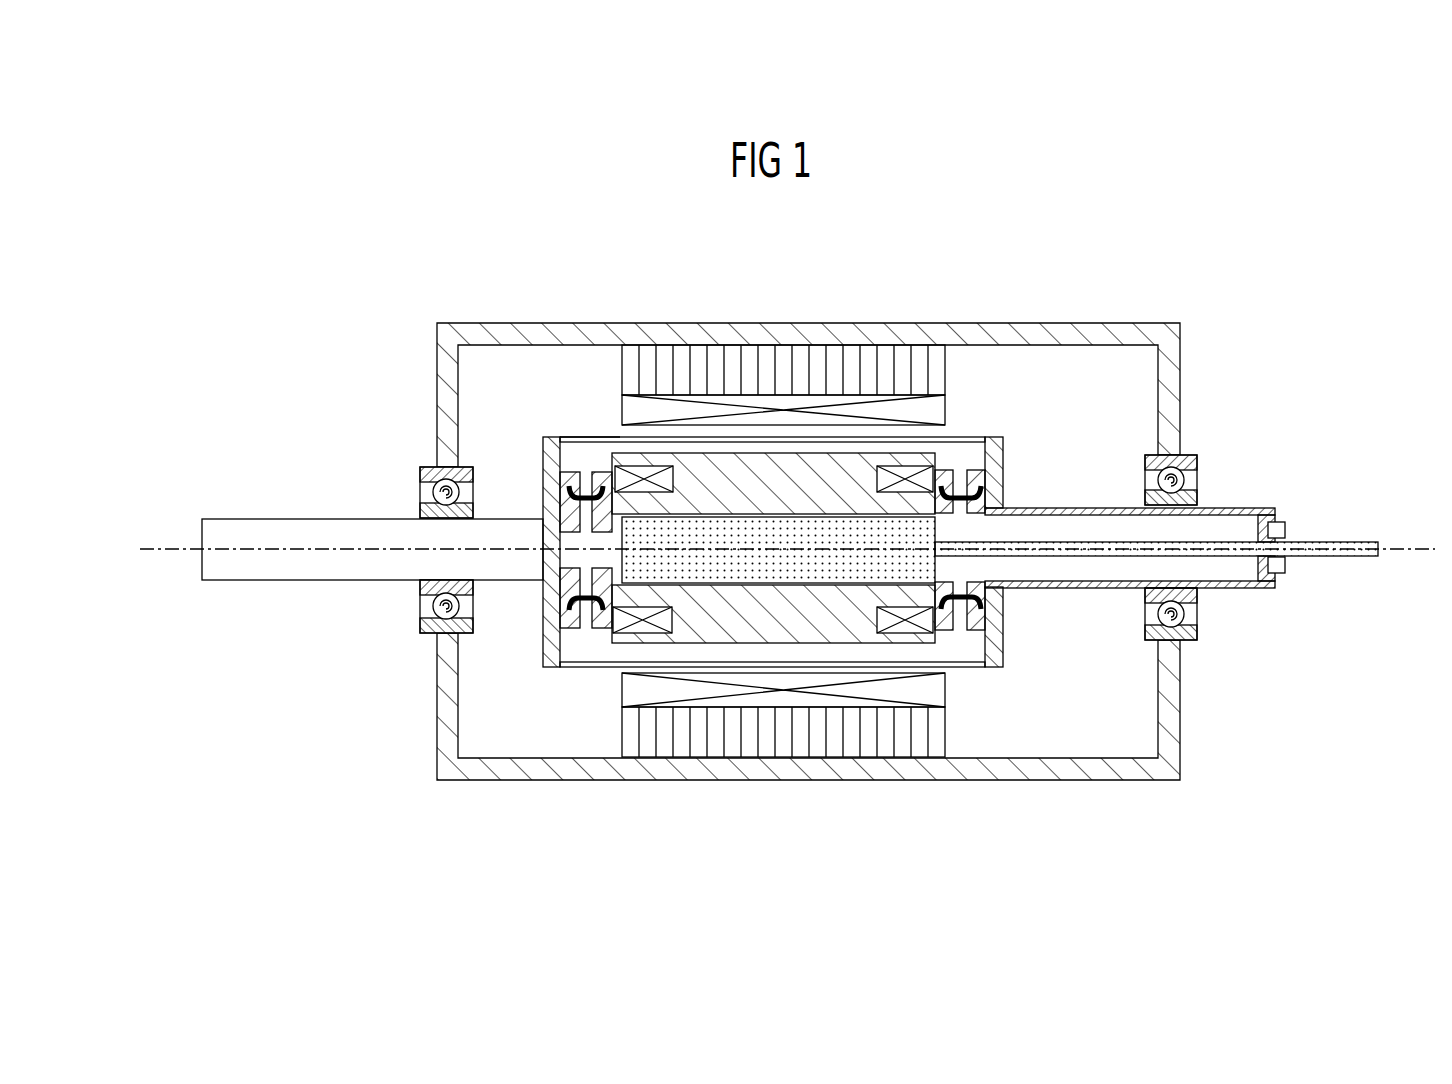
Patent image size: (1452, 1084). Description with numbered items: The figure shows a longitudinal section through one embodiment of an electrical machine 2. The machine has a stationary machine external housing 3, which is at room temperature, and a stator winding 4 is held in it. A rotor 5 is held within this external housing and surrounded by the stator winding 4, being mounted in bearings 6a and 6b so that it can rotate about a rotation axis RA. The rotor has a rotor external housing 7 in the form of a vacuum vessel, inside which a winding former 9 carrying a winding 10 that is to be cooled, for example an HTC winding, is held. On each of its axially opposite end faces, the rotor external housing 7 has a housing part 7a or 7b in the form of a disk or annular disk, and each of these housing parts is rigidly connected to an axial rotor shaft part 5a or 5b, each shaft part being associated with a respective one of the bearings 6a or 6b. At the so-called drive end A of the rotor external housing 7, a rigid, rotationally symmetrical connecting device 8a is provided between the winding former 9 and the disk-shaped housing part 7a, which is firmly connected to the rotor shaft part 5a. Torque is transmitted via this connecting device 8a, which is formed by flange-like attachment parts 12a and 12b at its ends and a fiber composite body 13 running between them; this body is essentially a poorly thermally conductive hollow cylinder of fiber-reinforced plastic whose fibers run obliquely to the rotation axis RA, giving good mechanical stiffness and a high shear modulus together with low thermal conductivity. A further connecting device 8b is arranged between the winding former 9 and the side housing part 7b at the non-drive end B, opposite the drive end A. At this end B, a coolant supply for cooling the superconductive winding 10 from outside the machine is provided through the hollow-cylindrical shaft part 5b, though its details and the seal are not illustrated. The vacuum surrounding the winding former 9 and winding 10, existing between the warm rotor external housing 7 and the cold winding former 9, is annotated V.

The machine 2 is at (782, 574).
The machine external housing 3 is at (446, 392).
The stator winding 4 is at (697, 413).
The rotor 5 is at (929, 504).
The rotor shaft part 5a is at (320, 521).
The rotor shaft part 5b is at (1122, 508).
The bearing 6a is at (420, 626).
The bearing 6b is at (1198, 630).
The rotor external housing 7 is at (772, 510).
The housing part 7a is at (548, 508).
The housing part 7b is at (1000, 467).
The connecting device 8a is at (589, 640).
The connecting device 8b is at (961, 632).
The winding former 9 is at (771, 490).
The winding 10 is at (642, 466).
The attachment part 12a is at (600, 470).
The attachment part 12b is at (568, 632).
The fiber composite body 13 is at (545, 458).
The drive end A is at (485, 297).
The non-drive end B is at (1096, 290).
The vacuum V is at (586, 488).
The rotation axis RA is at (163, 549).